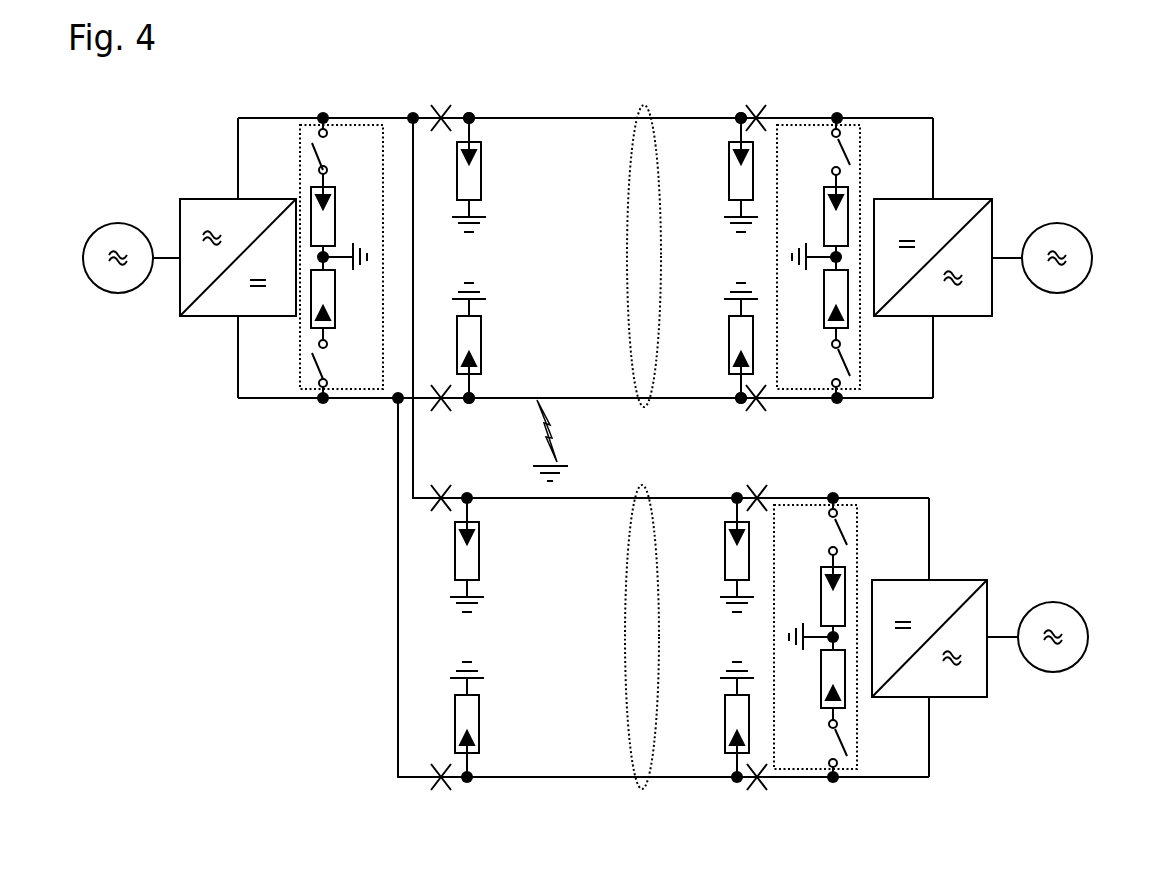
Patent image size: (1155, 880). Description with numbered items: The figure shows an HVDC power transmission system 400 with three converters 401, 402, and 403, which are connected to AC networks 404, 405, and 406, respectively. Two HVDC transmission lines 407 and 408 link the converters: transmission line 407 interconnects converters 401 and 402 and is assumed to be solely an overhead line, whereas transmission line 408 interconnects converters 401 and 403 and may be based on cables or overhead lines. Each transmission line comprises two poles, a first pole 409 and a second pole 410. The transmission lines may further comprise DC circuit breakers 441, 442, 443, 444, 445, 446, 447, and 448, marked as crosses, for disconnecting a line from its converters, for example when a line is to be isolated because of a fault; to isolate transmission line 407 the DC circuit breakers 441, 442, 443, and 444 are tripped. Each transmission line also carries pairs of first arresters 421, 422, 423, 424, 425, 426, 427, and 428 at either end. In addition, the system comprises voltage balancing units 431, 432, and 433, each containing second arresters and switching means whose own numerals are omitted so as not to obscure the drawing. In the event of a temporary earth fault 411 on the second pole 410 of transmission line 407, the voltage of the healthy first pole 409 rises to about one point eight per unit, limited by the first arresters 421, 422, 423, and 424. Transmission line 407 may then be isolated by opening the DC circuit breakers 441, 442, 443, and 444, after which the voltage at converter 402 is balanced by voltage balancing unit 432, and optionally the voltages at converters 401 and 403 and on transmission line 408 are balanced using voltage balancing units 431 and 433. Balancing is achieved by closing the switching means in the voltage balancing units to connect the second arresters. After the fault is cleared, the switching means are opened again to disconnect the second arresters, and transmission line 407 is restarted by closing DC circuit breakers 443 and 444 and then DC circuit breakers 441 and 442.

The HVDC power transmission system 400 is at (157, 826).
The converter 401 is at (220, 234).
The converter 402 is at (947, 234).
The converter 403 is at (945, 616).
The AC network 404 is at (109, 242).
The AC network 405 is at (1065, 242).
The AC network 406 is at (1061, 622).
The HVDC transmission line 407 is at (615, 256).
The HVDC transmission line 408 is at (613, 637).
The first pole 409 is at (585, 138).
The second pole 410 is at (584, 382).
The temporary earth fault 411 is at (573, 440).
The first arrester 421 is at (497, 172).
The first arrester 422 is at (497, 343).
The first arrester 423 is at (714, 172).
The first arrester 424 is at (714, 343).
The first arrester 425 is at (493, 552).
The first arrester 426 is at (493, 722).
The first arrester 427 is at (710, 552).
The first arrester 428 is at (710, 722).
The voltage balancing unit 431 is at (359, 151).
The voltage balancing unit 432 is at (800, 153).
The voltage balancing unit 433 is at (800, 522).
The DC circuit breaker 441 is at (444, 102).
The DC circuit breaker 442 is at (463, 416).
The DC circuit breaker 443 is at (729, 102).
The DC circuit breaker 444 is at (771, 416).
The DC circuit breaker 445 is at (463, 479).
The DC circuit breaker 446 is at (458, 798).
The DC circuit breaker 447 is at (733, 479).
The DC circuit breaker 448 is at (761, 798).